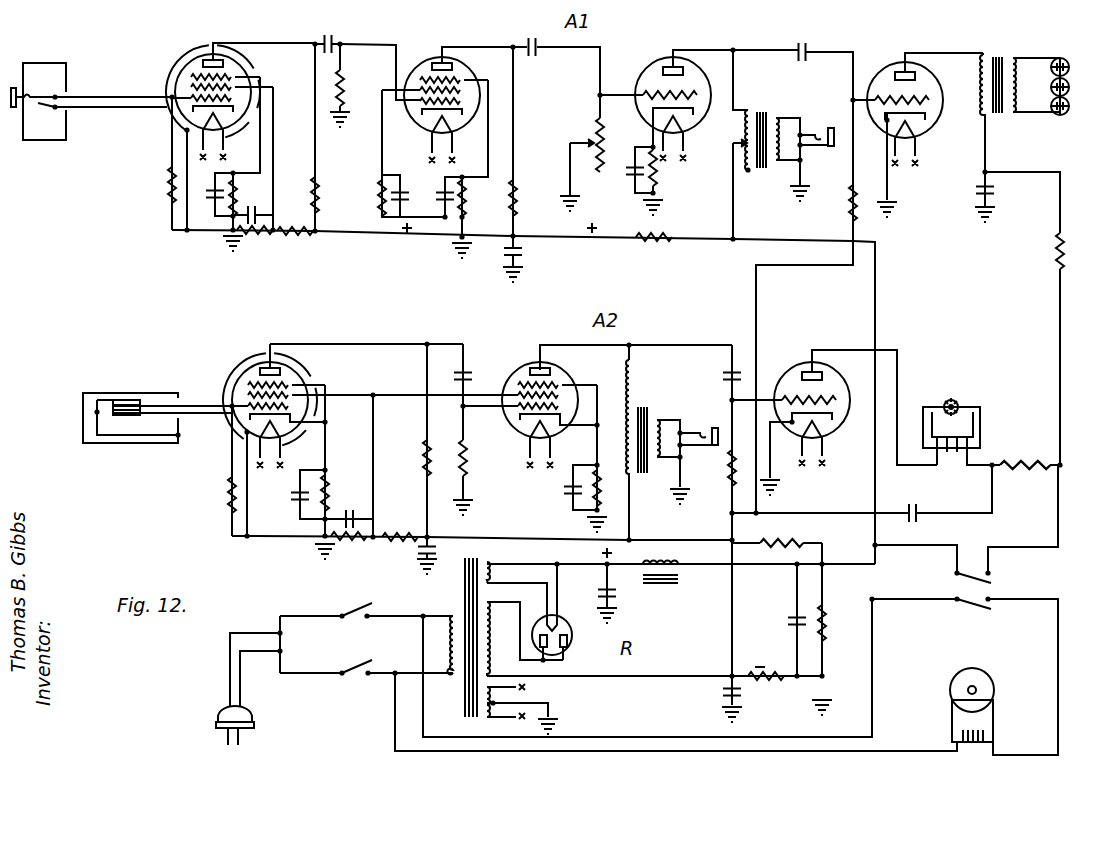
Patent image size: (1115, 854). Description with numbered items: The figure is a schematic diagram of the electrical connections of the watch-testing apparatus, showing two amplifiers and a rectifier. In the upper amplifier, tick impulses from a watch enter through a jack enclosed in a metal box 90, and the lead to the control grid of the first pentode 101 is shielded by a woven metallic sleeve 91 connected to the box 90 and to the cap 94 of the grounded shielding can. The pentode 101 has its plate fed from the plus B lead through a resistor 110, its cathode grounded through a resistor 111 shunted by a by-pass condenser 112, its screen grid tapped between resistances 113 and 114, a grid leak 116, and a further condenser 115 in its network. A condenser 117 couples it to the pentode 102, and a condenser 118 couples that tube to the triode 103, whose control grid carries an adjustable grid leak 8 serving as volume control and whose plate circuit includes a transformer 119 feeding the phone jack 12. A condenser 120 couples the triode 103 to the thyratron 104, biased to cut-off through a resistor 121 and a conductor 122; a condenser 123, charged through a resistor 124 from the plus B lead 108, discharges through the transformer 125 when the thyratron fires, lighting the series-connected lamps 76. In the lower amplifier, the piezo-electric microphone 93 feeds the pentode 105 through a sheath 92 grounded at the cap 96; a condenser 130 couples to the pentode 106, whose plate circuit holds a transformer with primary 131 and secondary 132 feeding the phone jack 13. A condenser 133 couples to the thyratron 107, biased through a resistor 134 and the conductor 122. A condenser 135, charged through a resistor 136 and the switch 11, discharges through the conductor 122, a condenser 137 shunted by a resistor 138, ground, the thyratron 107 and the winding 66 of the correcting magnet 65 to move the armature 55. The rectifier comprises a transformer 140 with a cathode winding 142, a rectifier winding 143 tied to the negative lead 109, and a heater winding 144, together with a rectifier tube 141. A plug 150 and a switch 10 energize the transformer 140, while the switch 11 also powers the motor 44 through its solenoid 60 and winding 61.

The metal box 90 is at (44, 63).
The woven metallic sleeve 91 is at (104, 96).
The cap of the shielding can 94 is at (185, 58).
The pentode 101 is at (260, 60).
The condenser 117 is at (336, 40).
The pentode 102 is at (432, 52).
The condenser 118 is at (528, 36).
The triode 103 is at (666, 64).
The condenser 120 is at (808, 48).
The transformer 125 is at (1020, 98).
The lamps 76 is at (1072, 104).
The adjustable grid leak 8 is at (582, 153).
The transformer 119 is at (771, 144).
The phone jack 12 is at (815, 133).
The thyratron 104 is at (930, 128).
The condenser 123 is at (978, 190).
The resistor 121 is at (846, 204).
The resistor 124 is at (1054, 258).
The grid leak 116 is at (164, 176).
The resistor 111 is at (236, 204).
The condenser 115 is at (272, 212).
The resistor 110 is at (321, 186).
The by-pass condenser 112 is at (205, 208).
The resistance 113 is at (255, 232).
The resistance 114 is at (303, 232).
The conductor 122 is at (712, 612).
The plus B lead 108 is at (876, 298).
The cap of the shielding can 96 is at (254, 358).
The microphone 93 is at (120, 394).
The metallic sheath 92 is at (196, 404).
The pentode 105 is at (306, 368).
The condenser 130 is at (481, 429).
The pentode 106 is at (576, 366).
The transformer primary winding 131 is at (644, 380).
The transformer 132 is at (670, 446).
The condenser 133 is at (726, 378).
The phone jack 13 is at (697, 431).
The thyratron 107 is at (834, 436).
The armature 55 is at (954, 398).
The correcting magnet 65 is at (981, 420).
The winding 66 is at (948, 466).
The resistor 136 is at (1017, 468).
The condenser 135 is at (908, 510).
The resistor 134 is at (726, 482).
The transformer 140 is at (464, 592).
The secondary winding 142 is at (493, 572).
The rectifier winding 143 is at (494, 636).
The rectifier tube 141 is at (573, 634).
The switch 10 is at (351, 639).
The plug 150 is at (254, 714).
The third winding 144 is at (522, 712).
The negative output lead 109 is at (644, 674).
The condenser 137 is at (753, 699).
The resistor 138 is at (766, 666).
The switch 11 is at (950, 588).
The motor 44 is at (986, 668).
The solenoid 60 is at (994, 712).
The winding of the motor 61 is at (972, 760).